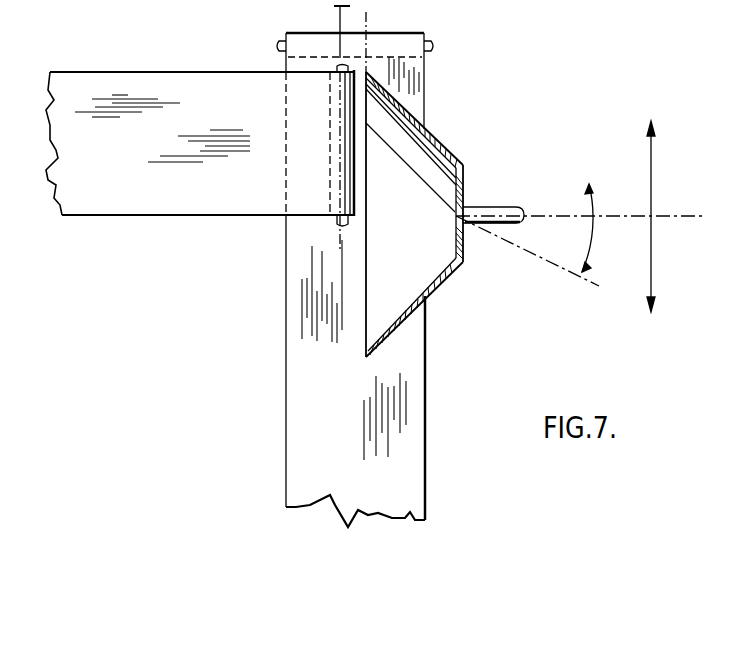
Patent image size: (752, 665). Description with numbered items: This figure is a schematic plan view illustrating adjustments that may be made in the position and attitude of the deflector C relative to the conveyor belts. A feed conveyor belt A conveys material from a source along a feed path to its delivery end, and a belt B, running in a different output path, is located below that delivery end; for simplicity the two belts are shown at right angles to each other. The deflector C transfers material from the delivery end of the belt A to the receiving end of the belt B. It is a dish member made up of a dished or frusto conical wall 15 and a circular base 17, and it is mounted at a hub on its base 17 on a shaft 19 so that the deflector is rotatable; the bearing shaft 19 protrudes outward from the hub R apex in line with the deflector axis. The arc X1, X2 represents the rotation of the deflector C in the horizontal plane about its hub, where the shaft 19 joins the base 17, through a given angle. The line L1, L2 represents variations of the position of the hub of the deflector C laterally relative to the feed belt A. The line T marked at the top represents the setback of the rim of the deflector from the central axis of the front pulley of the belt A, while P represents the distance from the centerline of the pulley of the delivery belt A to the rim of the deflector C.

The feed conveyor belt A is at (134, 72).
The receiving belt B is at (425, 432).
The deflector C is at (437, 140).
The frusto conical wall 15 is at (442, 285).
The circular base 17 is at (462, 218).
The shaft 19 is at (507, 207).
The hub apex R is at (466, 214).
The distance from pulley centerline to deflector rim P is at (502, 231).
The setback line T is at (352, 14).
The arc of rotation end point X1 is at (589, 186).
The arc of rotation end point X2 is at (527, 264).
The lateral position line end point L1 is at (652, 157).
The lateral position line end point L2 is at (655, 280).